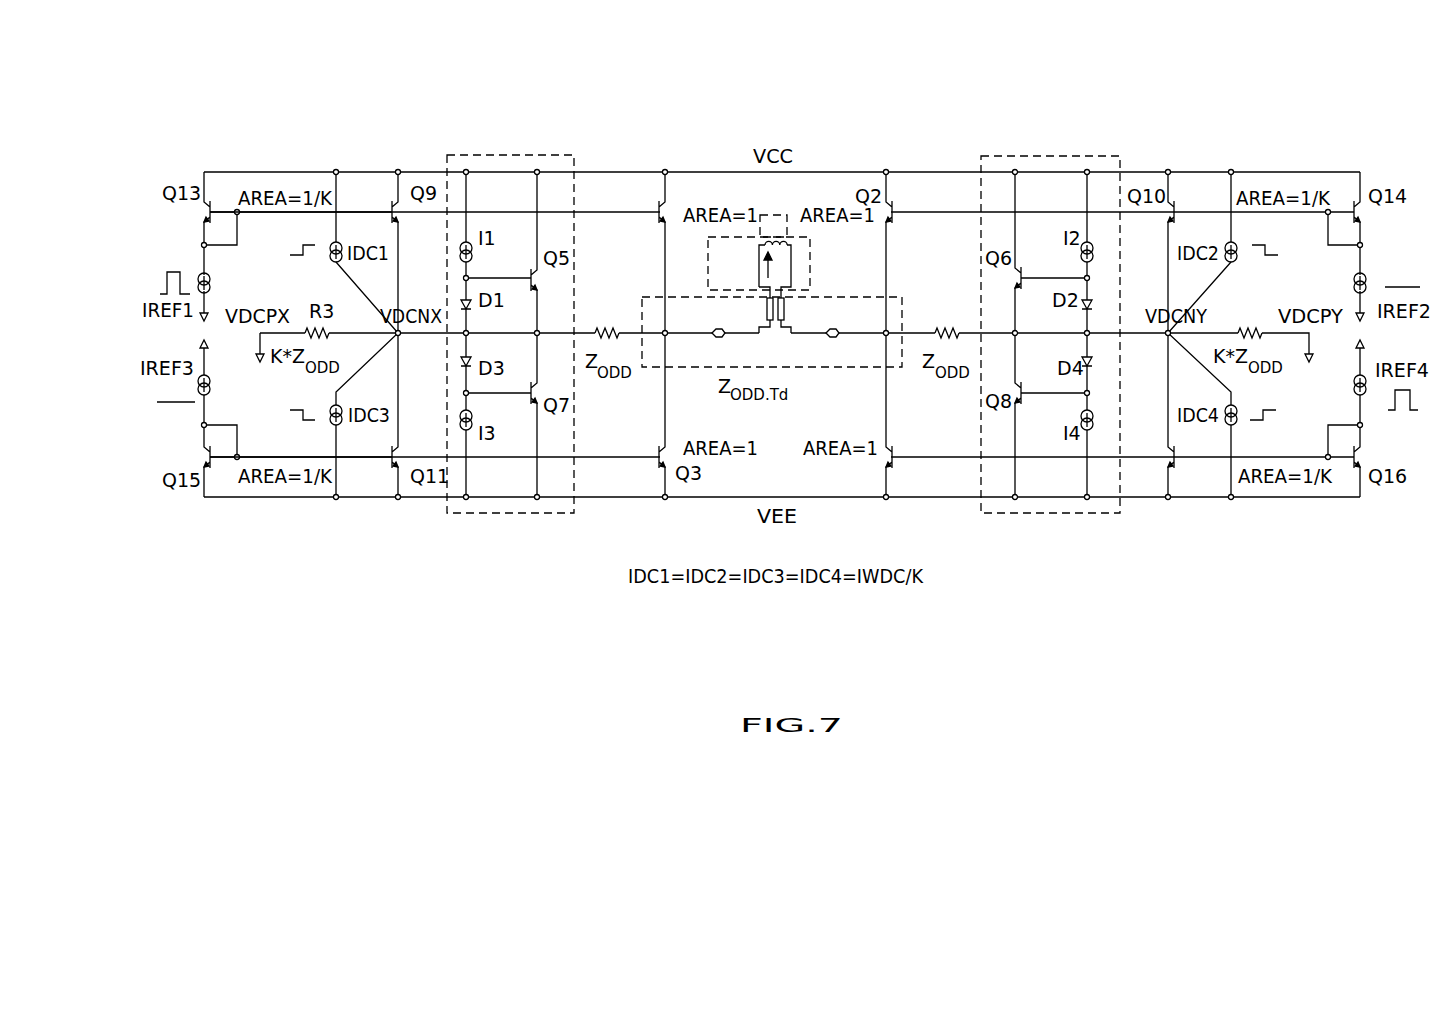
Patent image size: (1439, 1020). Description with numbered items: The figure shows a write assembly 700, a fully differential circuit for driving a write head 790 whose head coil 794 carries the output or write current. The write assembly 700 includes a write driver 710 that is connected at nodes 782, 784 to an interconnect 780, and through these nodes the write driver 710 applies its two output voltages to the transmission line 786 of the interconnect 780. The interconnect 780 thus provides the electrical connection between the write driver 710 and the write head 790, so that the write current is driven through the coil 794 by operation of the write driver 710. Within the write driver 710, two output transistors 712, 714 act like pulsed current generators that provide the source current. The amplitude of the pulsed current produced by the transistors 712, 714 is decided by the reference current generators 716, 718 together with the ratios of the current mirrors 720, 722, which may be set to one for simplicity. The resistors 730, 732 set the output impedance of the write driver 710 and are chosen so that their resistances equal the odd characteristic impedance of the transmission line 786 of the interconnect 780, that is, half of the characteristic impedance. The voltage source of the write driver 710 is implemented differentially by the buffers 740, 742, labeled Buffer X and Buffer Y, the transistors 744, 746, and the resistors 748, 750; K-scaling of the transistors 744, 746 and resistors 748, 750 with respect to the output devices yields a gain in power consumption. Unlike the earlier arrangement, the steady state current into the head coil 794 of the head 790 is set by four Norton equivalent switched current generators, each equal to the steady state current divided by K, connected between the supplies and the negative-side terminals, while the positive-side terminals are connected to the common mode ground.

The write assembly 700 is at (353, 73).
The write driver 710 is at (330, 142).
The transistor Q1 712 is at (660, 205).
The transistor Q4 714 is at (893, 465).
The reference current generator IREF1 716 is at (212, 283).
The reference current generator IREF2 718 is at (1352, 385).
The current mirror 720 is at (250, 164).
The current mirror 722 is at (1327, 500).
The resistor R1 730 is at (617, 322).
The resistor R2 732 is at (937, 323).
The buffer X 740 is at (572, 155).
The buffer Y 742 is at (1118, 155).
The transistor Q9 744 is at (404, 214).
The transistor Q12 746 is at (1157, 487).
The resistor R3 748 is at (331, 337).
The resistor R4 750 is at (1262, 325).
The interconnect 780 is at (828, 297).
The node 782 is at (672, 335).
The node 784 is at (880, 335).
The transmission line 786 is at (778, 335).
The write head 790 is at (812, 262).
The head coil 794 is at (758, 247).